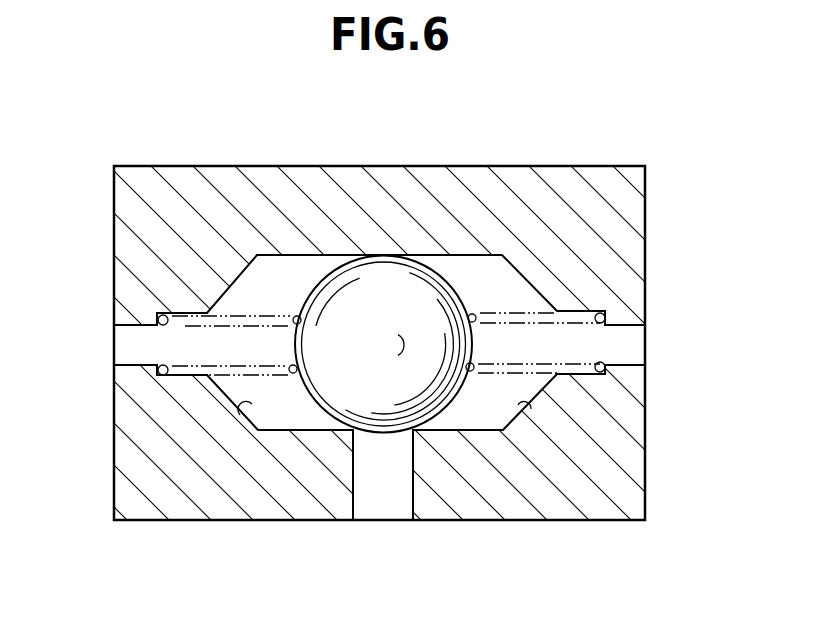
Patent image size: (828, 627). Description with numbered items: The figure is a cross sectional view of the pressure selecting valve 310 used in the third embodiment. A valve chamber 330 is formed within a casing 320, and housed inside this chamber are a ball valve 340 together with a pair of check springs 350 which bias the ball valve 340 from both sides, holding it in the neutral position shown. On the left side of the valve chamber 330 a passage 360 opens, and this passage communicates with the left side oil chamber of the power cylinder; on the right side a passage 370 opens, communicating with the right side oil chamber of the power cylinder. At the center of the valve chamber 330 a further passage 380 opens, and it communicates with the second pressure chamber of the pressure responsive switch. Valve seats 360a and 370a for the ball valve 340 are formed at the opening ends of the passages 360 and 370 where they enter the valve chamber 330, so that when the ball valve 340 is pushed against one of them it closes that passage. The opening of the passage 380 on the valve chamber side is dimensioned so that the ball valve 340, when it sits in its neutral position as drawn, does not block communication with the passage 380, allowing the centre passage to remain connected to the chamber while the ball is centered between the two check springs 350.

The pressure selecting valve 310 is at (206, 156).
The casing 320 is at (598, 178).
The valve chamber 330 is at (468, 262).
The ball valve 340 is at (382, 278).
The check springs 350 is at (270, 313).
The passage 360 is at (133, 353).
The passage 370 is at (628, 353).
The valve seat 360a is at (253, 412).
The valve seat 370a is at (512, 420).
The passage 380 is at (386, 503).